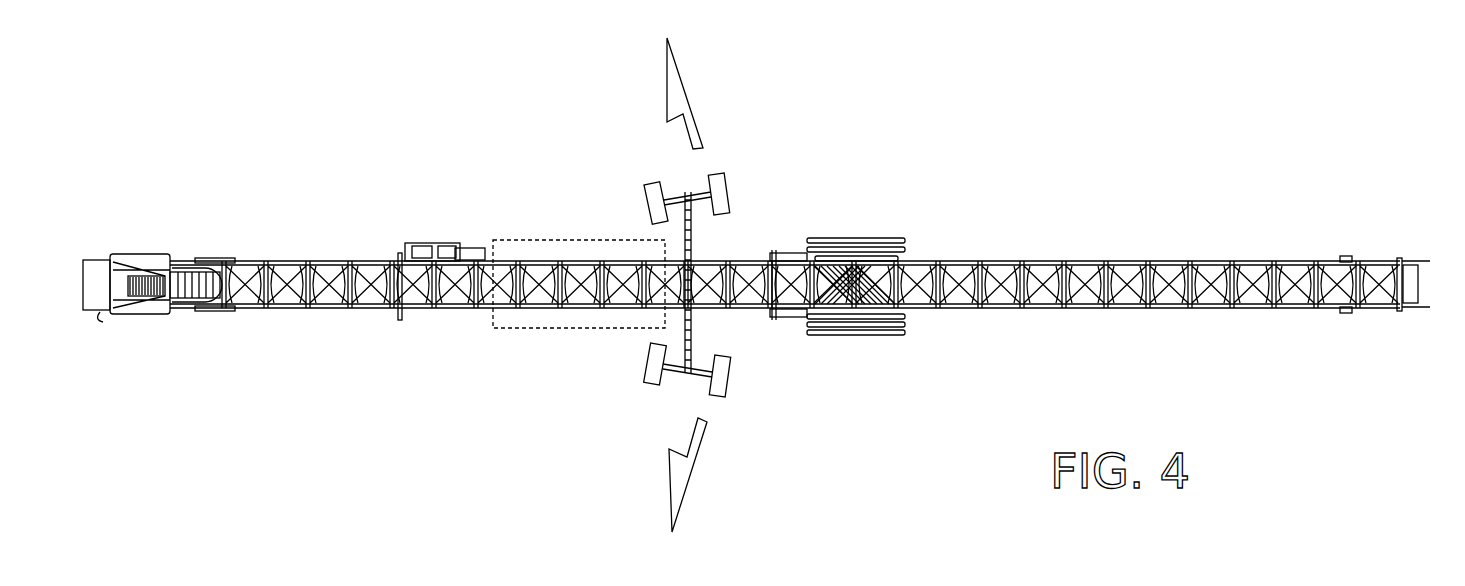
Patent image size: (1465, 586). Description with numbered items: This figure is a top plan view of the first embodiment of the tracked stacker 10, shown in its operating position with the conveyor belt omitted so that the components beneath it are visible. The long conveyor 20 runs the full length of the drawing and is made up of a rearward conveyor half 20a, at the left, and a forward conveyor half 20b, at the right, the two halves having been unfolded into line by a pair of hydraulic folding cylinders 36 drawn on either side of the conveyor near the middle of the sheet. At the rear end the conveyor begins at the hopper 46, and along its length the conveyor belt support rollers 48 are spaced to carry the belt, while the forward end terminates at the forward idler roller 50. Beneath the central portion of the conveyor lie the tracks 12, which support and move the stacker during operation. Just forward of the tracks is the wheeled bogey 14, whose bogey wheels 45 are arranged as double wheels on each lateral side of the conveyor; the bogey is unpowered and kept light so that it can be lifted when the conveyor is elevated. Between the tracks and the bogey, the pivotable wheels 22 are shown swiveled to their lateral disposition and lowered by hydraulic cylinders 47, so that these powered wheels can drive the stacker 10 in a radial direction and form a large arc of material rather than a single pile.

The tracked stacker 10 is at (566, 132).
The tracks 12 is at (540, 238).
The wheeled bogey 14 is at (912, 320).
The conveyor 20 is at (1024, 242).
The rearward conveyor half 20a is at (330, 312).
The forward conveyor half 20b is at (1163, 262).
The pivotable wheels 22 is at (657, 190).
The hydraulic folding cylinders 36 is at (800, 252).
The bogey wheels 45 is at (882, 240).
The hopper 46 is at (148, 265).
The hydraulic cylinders 47 is at (692, 238).
The conveyor belt support rollers 48 is at (345, 287).
The forward idler roller 50 is at (1415, 283).